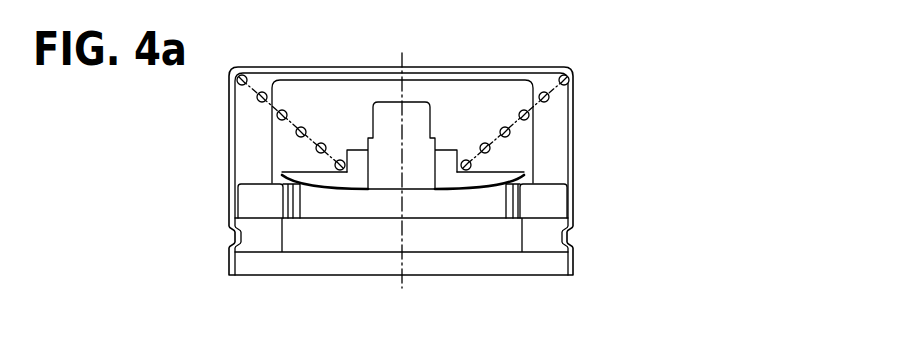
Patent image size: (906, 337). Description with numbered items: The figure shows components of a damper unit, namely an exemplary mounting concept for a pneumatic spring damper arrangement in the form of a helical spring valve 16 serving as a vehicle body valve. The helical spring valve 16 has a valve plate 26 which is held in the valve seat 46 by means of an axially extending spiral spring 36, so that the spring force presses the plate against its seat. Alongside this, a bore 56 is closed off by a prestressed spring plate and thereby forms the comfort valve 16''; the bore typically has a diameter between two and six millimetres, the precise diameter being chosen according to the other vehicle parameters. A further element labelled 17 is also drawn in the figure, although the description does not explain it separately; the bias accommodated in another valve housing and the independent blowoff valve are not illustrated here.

The helical spring valve 16 is at (342, 219).
The comfort valve 16'' is at (308, 151).
The housing 17 is at (418, 202).
The valve plate 26 is at (547, 202).
The spiral spring 36 is at (548, 98).
The valve seat 46 is at (560, 222).
The bore 56 is at (292, 202).